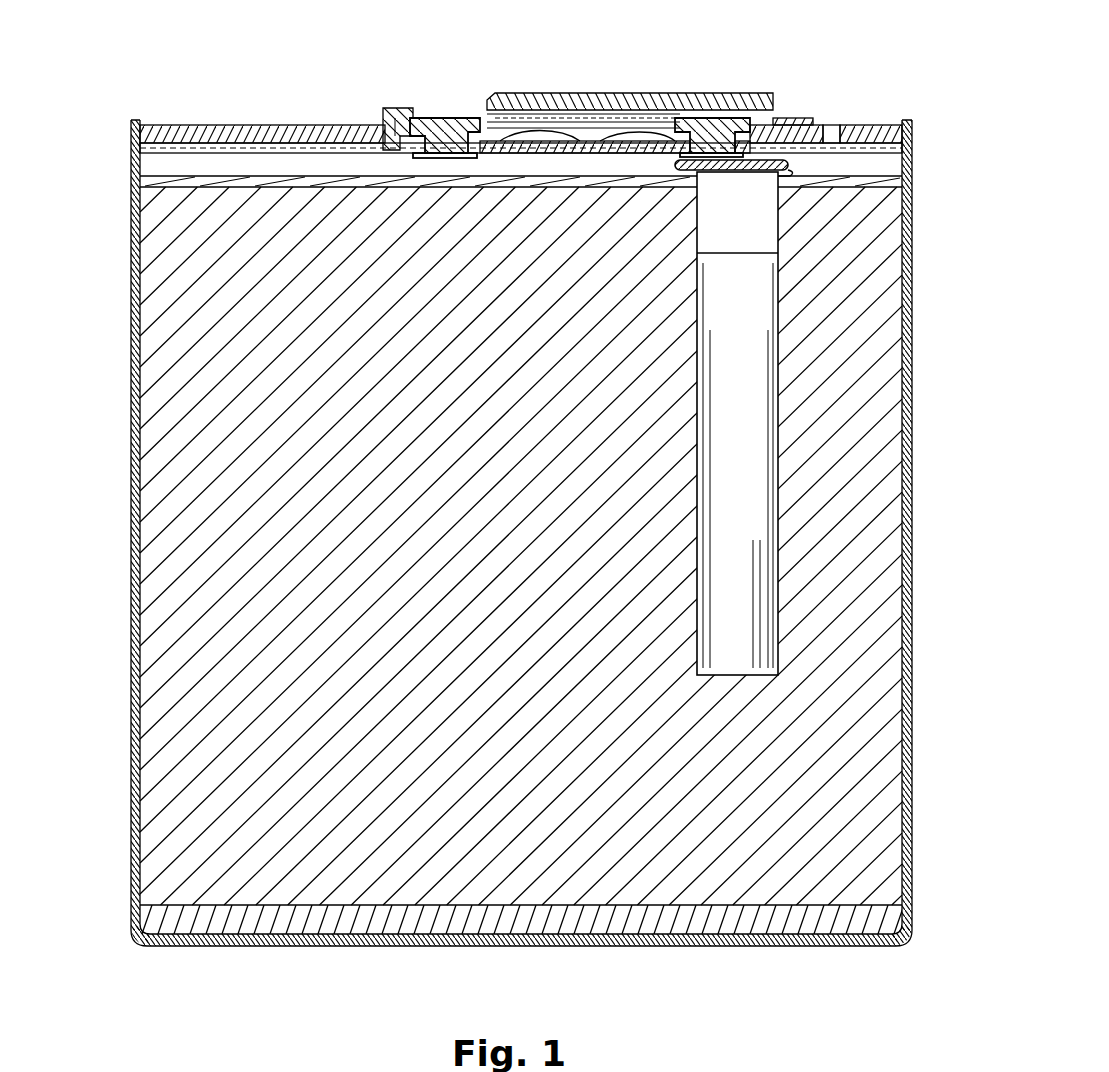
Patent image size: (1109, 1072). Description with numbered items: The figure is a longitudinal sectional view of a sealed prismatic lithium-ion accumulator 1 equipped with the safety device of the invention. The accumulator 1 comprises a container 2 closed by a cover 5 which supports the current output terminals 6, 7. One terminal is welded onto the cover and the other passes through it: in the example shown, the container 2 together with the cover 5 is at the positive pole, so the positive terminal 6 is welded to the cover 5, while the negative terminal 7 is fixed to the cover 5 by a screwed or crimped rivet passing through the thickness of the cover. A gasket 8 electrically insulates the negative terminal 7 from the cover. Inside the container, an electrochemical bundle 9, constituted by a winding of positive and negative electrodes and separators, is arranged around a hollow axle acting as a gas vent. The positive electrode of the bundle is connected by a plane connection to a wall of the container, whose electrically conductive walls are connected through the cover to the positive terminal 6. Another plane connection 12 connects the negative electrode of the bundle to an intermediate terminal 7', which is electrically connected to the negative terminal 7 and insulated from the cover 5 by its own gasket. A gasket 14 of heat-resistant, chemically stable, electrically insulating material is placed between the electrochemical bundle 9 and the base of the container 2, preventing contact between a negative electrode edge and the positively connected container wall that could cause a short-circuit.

The accumulator 1 is at (815, 63).
The container 2 is at (134, 288).
The cover 5 is at (202, 127).
The positive terminal 6 is at (862, 122).
The negative terminal 7 is at (426, 105).
The intermediate terminal 7' is at (630, 89).
The gasket 8 is at (398, 146).
The electrochemical bundle 9 is at (277, 380).
The plane connection 12 is at (795, 163).
The gasket 14 is at (878, 918).